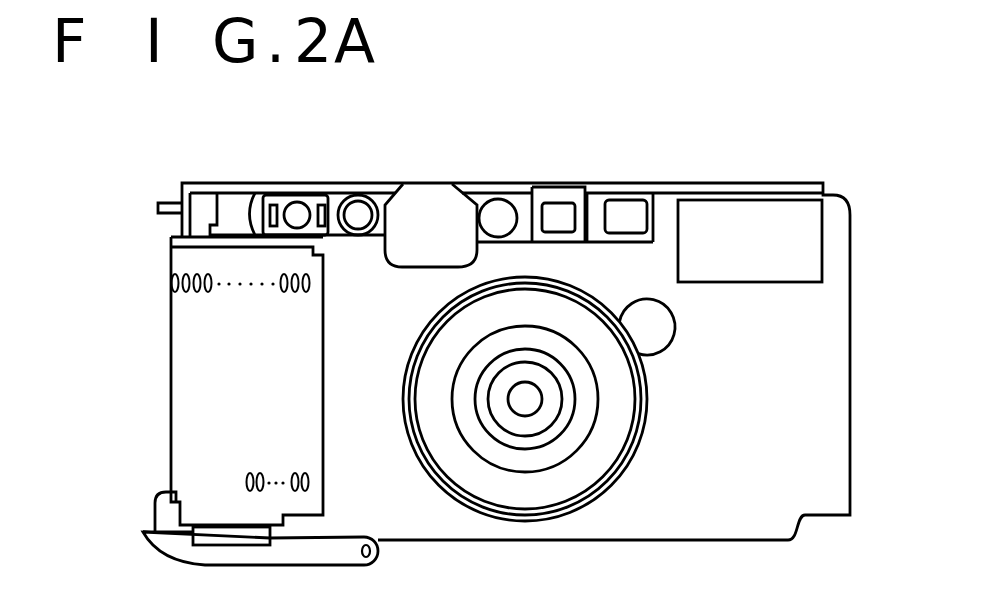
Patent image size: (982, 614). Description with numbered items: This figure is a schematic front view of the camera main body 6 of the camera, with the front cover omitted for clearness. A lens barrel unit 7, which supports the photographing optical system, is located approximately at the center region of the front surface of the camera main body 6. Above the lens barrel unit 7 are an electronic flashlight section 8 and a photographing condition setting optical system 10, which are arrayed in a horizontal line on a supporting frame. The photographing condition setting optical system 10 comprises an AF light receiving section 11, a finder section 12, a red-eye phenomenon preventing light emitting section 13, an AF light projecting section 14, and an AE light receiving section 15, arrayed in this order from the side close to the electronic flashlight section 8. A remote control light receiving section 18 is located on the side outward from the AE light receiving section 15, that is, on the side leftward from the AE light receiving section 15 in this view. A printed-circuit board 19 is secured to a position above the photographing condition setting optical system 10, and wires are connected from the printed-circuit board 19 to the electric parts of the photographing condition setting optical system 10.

The camera main body 6 is at (895, 178).
The lens barrel unit 7 is at (610, 430).
The electronic flashlight section 8 is at (752, 233).
The photographing condition setting optical system 10 is at (632, 113).
The AF light receiving section 11 is at (616, 181).
The finder section 12 is at (549, 181).
The red-eye phenomenon preventing light emitting section 13 is at (489, 181).
The AF light projecting section 14 is at (423, 181).
The AE light receiving section 15 is at (358, 181).
The remote control light receiving section 18 is at (293, 181).
The printed-circuit board 19 is at (203, 181).